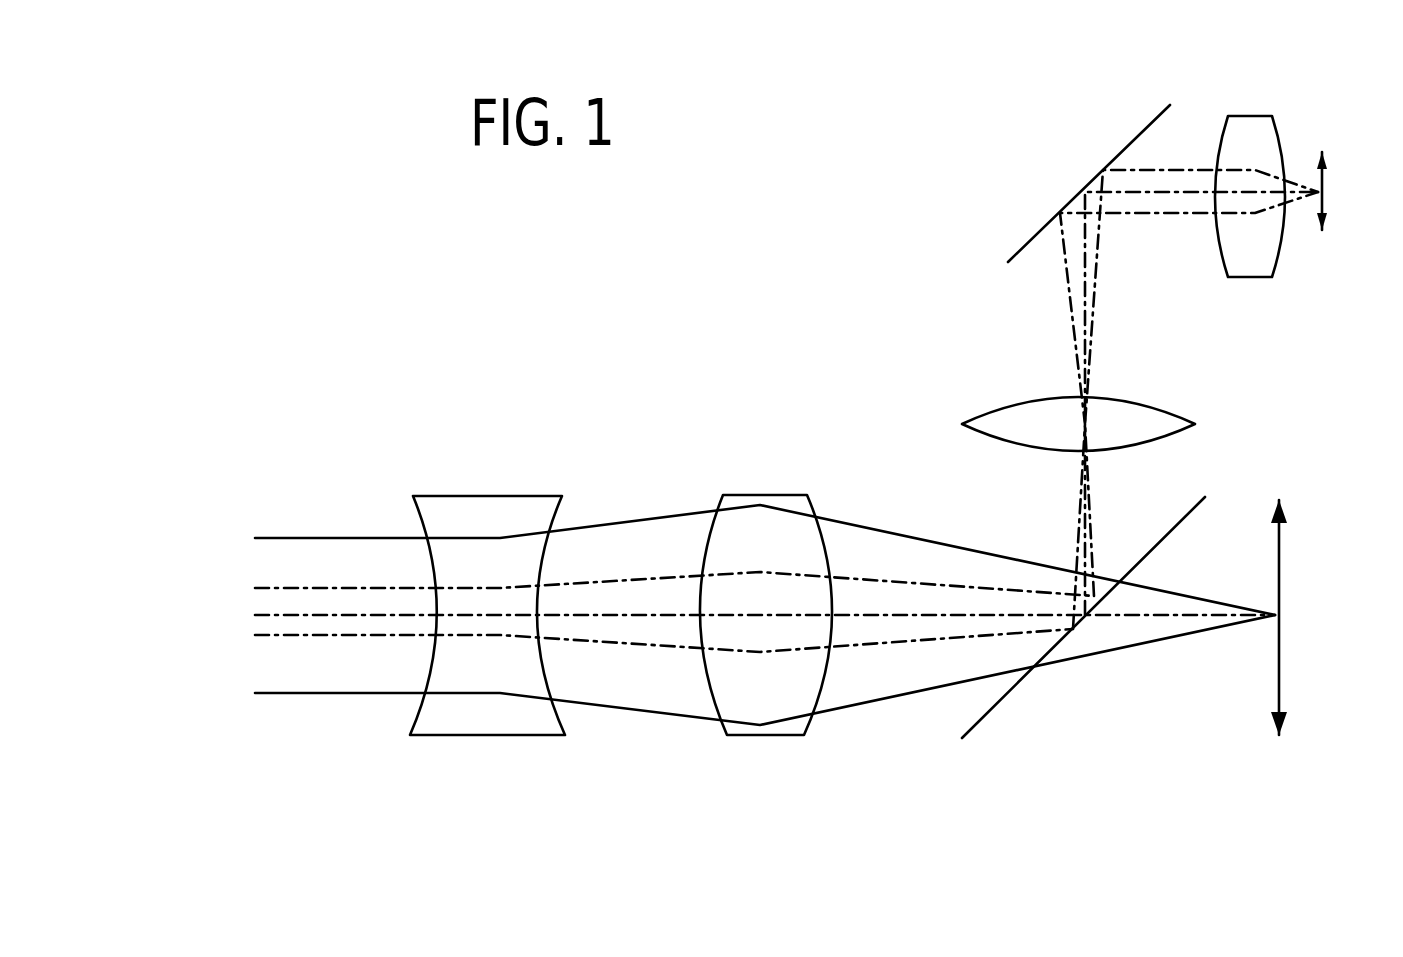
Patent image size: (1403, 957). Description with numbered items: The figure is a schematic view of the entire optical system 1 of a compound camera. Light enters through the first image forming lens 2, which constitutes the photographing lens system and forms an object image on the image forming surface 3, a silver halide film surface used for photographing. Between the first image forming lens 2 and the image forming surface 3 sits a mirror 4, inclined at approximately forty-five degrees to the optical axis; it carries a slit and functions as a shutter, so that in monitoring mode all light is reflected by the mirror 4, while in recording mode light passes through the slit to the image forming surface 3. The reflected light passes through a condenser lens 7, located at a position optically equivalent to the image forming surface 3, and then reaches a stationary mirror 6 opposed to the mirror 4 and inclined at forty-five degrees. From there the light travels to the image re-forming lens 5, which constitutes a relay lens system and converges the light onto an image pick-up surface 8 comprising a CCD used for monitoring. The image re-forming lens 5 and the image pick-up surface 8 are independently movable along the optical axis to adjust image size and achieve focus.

The optical system 1 is at (742, 300).
The first image forming lens 2 is at (452, 765).
The image forming surface 3 is at (1279, 650).
The mirror 4 is at (1003, 698).
The image re-forming lens 5 is at (1244, 116).
The stationary mirror 6 is at (1038, 226).
The condenser lens 7 is at (1005, 410).
The image pick-up surface 8 is at (1323, 205).